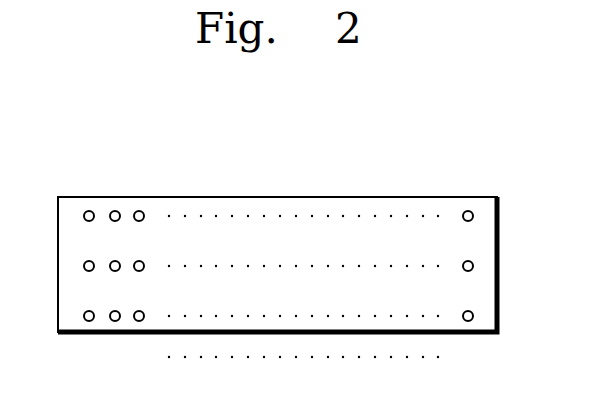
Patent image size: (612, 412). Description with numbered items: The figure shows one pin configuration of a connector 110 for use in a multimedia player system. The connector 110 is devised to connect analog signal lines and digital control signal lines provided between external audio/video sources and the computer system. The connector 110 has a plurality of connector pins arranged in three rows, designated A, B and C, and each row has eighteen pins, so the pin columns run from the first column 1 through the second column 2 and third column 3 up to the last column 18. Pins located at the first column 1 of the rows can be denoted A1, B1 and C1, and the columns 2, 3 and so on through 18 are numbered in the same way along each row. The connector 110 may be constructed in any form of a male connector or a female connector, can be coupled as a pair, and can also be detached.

The connector 110 is at (273, 197).
The first pin column 1 is at (88, 289).
The second pin column 2 is at (114, 289).
The third pin column 3 is at (138, 289).
The eighteenth pin column 18 is at (468, 289).